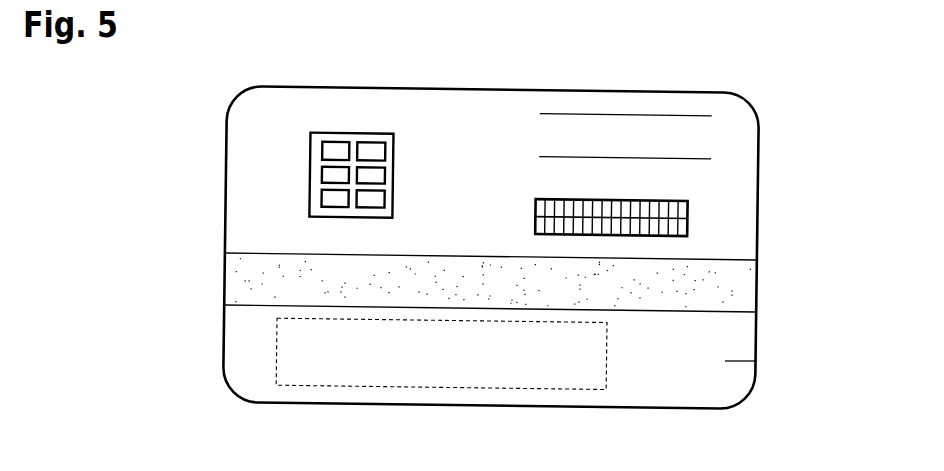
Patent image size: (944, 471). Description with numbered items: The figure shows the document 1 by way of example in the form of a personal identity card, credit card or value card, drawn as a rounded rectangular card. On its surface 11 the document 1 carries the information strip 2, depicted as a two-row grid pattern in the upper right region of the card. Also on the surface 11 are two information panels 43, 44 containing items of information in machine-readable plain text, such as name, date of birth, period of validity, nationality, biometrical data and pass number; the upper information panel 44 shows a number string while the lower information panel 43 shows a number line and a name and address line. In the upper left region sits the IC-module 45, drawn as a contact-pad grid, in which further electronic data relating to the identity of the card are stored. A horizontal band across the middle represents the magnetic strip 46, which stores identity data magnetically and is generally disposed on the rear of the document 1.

The document 1 is at (233, 368).
The information strip 2 is at (688, 218).
The surface 11 is at (757, 361).
The information panel 43 is at (538, 388).
The information panel 44 is at (715, 143).
The IC-module 45 is at (340, 133).
The magnetic strip 46 is at (275, 295).